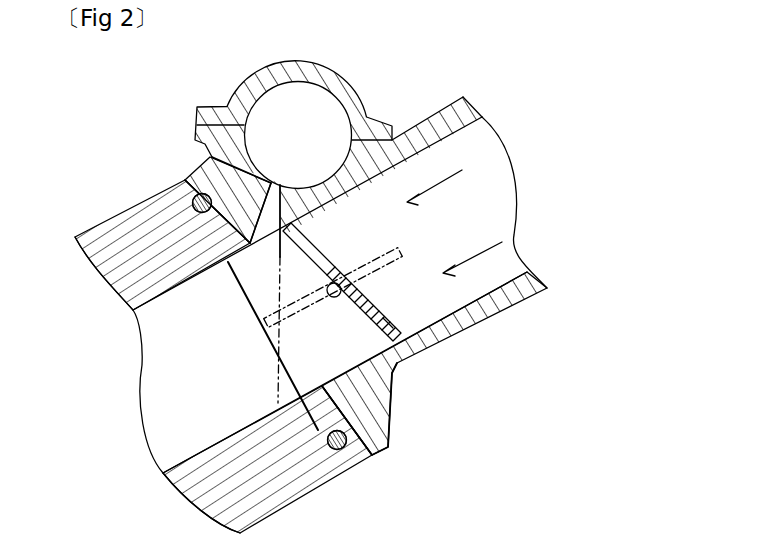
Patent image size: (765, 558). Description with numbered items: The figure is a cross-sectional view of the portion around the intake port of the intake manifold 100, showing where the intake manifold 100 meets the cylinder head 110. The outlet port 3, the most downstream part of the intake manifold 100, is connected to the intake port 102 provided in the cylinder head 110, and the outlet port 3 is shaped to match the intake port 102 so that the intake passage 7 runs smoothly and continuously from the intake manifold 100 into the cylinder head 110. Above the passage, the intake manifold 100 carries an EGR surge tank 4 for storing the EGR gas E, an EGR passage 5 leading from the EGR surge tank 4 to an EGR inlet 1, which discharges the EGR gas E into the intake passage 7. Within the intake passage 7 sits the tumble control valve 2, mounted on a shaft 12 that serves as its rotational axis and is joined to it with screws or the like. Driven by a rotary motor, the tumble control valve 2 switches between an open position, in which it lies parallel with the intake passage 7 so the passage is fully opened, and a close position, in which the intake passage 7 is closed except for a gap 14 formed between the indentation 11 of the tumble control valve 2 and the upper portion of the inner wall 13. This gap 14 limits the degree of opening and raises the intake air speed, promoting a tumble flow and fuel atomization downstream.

The EGR inlet 1 is at (266, 234).
The tumble control valve 2 is at (382, 313).
The outlet port 3 is at (240, 300).
The EGR surge tank 4 is at (318, 94).
The EGR passage 5 is at (258, 252).
The intake passage 7 is at (497, 218).
The indentation 11 is at (307, 243).
The shaft 12 is at (337, 303).
The inner wall 13 is at (357, 187).
The gap 14 is at (333, 288).
The intake manifold 100 is at (505, 315).
The intake port 102 is at (296, 376).
The cylinder head 110 is at (282, 496).
The EGR gas E is at (256, 283).